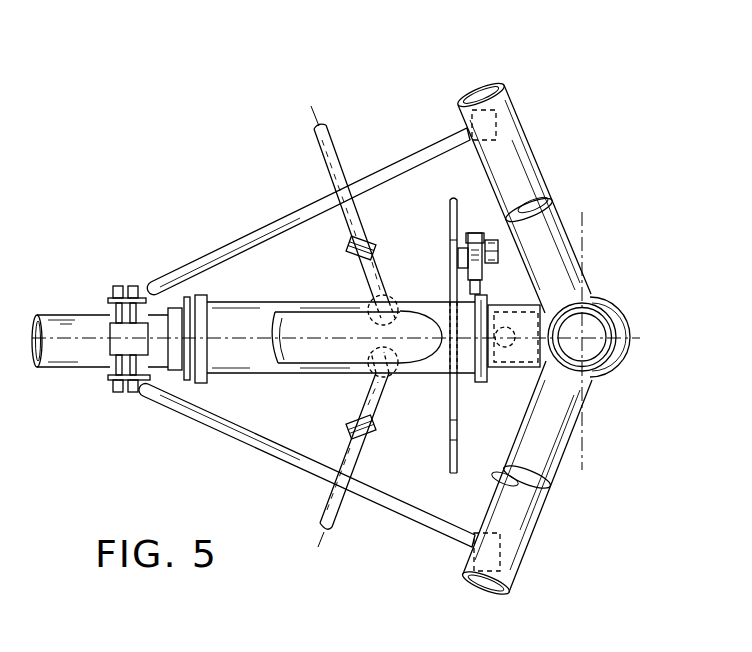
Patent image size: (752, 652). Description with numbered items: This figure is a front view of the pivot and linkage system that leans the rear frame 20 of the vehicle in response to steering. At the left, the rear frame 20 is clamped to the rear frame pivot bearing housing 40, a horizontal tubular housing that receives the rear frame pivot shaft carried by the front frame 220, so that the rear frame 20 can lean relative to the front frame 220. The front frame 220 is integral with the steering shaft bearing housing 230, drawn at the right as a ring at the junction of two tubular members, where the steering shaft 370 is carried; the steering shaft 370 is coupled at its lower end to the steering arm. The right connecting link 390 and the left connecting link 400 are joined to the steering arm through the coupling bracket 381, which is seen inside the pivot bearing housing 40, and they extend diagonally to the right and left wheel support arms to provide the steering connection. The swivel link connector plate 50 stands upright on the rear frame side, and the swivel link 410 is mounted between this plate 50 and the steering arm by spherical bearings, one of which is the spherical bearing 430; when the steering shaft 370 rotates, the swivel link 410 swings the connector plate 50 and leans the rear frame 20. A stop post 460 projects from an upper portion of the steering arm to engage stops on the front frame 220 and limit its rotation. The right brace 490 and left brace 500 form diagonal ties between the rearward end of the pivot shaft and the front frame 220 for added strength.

The rear frame 20 is at (82, 367).
The rear frame pivot bearing housing 40 is at (240, 302).
The swivel link connector plate 50 is at (450, 412).
The front frame 220 is at (550, 200).
The steering shaft bearing housing 230 is at (607, 306).
The steering shaft 370 is at (628, 325).
The coupling bracket 381 is at (429, 304).
The right connecting link 390 is at (330, 498).
The left connecting link 400 is at (330, 177).
The swivel link 410 is at (475, 232).
The spherical bearing 430 is at (460, 240).
The stop post 460 is at (500, 378).
The right brace 490 is at (223, 432).
The left brace 500 is at (224, 246).